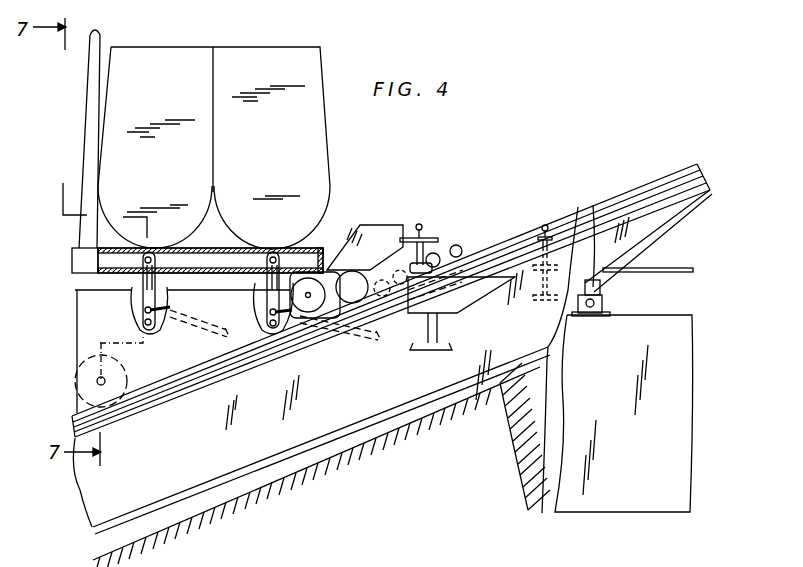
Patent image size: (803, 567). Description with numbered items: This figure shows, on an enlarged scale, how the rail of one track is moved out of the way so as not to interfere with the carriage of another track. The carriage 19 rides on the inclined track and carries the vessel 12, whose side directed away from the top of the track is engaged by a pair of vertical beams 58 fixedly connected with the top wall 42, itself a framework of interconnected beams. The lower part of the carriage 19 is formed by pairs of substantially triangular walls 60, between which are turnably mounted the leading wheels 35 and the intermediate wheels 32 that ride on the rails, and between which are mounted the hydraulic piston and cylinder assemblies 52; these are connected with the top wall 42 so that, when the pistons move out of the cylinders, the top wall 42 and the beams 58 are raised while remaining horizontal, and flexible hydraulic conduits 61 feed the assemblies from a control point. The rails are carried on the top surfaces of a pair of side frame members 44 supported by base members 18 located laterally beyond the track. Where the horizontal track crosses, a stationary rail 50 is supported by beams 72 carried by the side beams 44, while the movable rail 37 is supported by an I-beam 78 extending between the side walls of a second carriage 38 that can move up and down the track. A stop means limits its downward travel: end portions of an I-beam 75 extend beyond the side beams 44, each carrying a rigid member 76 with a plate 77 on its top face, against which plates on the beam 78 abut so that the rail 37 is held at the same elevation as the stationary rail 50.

The vessel 12 is at (327, 118).
The vertical beams 58 is at (88, 131).
The top wall 42 is at (318, 250).
The carriage 19 is at (180, 360).
The walls 60 is at (205, 353).
The side frame members 44 is at (100, 505).
The hydraulic piston and cylinder assemblies 52 is at (140, 300).
The flexible hydraulic conduits 61 is at (350, 335).
The intermediate wheel 32 is at (312, 318).
The leading wheel 35 is at (352, 268).
The carriage 38 is at (452, 247).
The movable rail 37 is at (420, 224).
The I-beam 78 is at (431, 265).
The plate 77 is at (409, 261).
The rigid member 76 is at (482, 293).
The I-beam end portion 75 is at (414, 345).
The beams 72 is at (543, 298).
The stationary rail 50 is at (545, 225).
The base members 18 is at (673, 462).